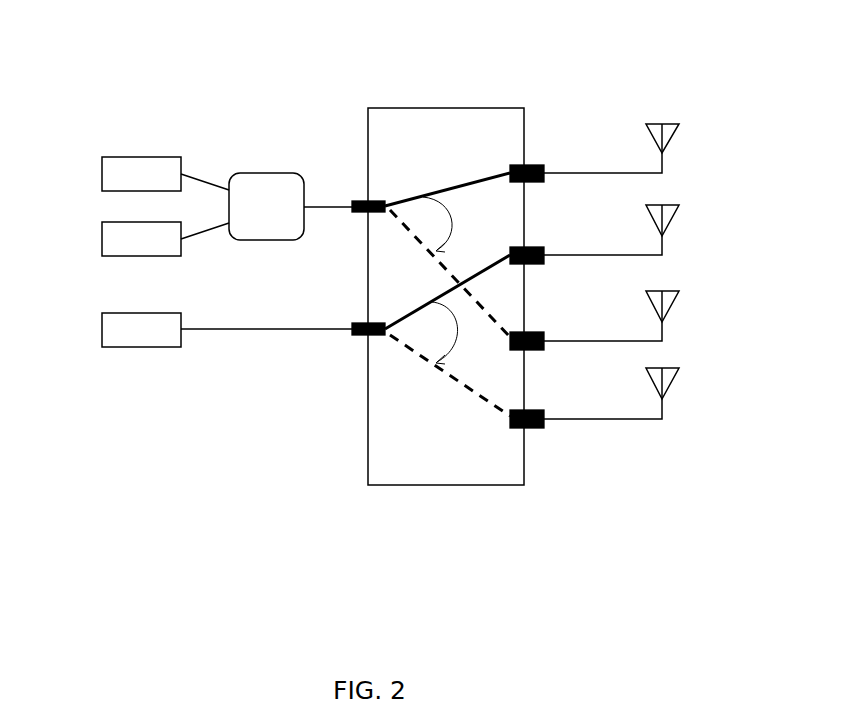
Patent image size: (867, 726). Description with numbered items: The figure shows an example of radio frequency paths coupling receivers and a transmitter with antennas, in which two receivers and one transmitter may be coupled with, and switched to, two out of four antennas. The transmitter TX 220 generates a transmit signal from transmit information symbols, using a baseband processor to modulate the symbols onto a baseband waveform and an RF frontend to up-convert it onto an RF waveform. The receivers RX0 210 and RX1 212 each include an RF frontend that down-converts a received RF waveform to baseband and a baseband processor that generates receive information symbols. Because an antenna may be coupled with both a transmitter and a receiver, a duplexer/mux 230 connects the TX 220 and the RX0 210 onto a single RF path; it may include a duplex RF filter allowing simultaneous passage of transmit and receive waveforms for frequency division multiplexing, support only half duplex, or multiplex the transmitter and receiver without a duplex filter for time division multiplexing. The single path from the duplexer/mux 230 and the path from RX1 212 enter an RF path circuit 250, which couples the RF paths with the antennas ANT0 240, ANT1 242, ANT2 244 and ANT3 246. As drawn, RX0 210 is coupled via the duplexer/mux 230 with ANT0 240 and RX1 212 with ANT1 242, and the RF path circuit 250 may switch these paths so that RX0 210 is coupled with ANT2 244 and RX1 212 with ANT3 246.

The RX0 210 is at (102, 239).
The RX1 212 is at (102, 335).
The TX 220 is at (112, 156).
The duplexer/mux 230 is at (260, 173).
The ANT0 240 is at (682, 125).
The ANT1 242 is at (682, 207).
The ANT2 244 is at (682, 293).
The ANT3 246 is at (682, 370).
The RF path circuit 250 is at (410, 107).